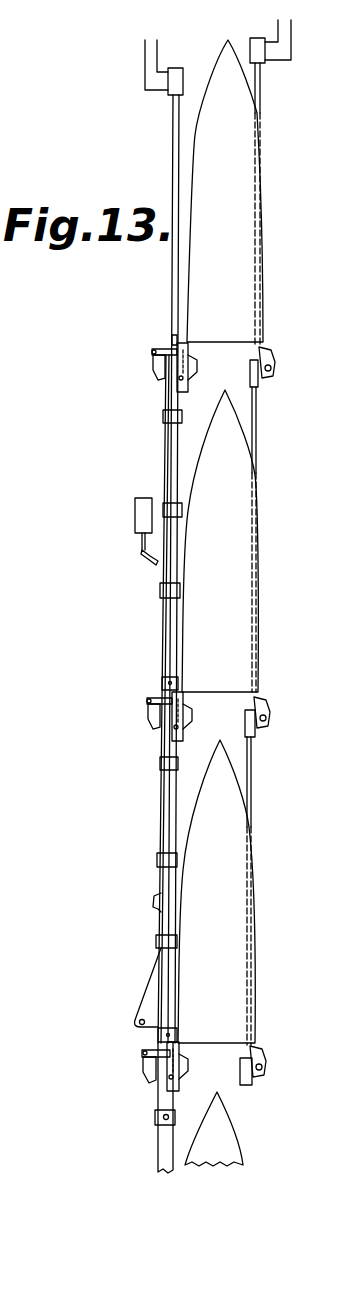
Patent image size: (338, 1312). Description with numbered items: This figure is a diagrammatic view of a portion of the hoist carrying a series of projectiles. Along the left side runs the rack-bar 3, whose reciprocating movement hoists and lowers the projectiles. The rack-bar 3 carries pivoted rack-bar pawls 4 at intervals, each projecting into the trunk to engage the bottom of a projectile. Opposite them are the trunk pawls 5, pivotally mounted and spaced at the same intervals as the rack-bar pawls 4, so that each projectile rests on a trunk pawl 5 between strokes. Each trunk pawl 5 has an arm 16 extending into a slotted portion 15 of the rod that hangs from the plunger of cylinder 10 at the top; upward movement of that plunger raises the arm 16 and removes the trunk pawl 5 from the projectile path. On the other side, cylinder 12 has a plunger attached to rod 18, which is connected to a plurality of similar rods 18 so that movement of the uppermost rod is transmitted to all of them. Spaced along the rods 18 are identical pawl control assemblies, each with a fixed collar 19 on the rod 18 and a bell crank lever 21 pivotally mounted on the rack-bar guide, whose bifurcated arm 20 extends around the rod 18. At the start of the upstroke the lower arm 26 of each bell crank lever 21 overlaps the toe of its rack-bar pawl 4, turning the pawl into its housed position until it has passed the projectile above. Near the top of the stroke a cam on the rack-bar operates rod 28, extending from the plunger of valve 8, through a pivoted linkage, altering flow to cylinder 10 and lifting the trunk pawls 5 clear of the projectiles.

The rack-bar 3 is at (175, 435).
The rack-bar pawl 4 is at (198, 365).
The trunk pawl 5 is at (265, 348).
The valve 8 is at (142, 518).
The cylinder 10 is at (262, 60).
The cylinder 12 is at (180, 68).
The slotted portion 15 is at (250, 373).
The arm 16 is at (273, 378).
The rod 18 is at (173, 167).
The fixed collar 19 is at (172, 340).
The bifurcated arm 20 is at (170, 348).
The bell crank lever 21 is at (145, 348).
The lower arm 26 is at (157, 365).
The rod 28 is at (142, 542).